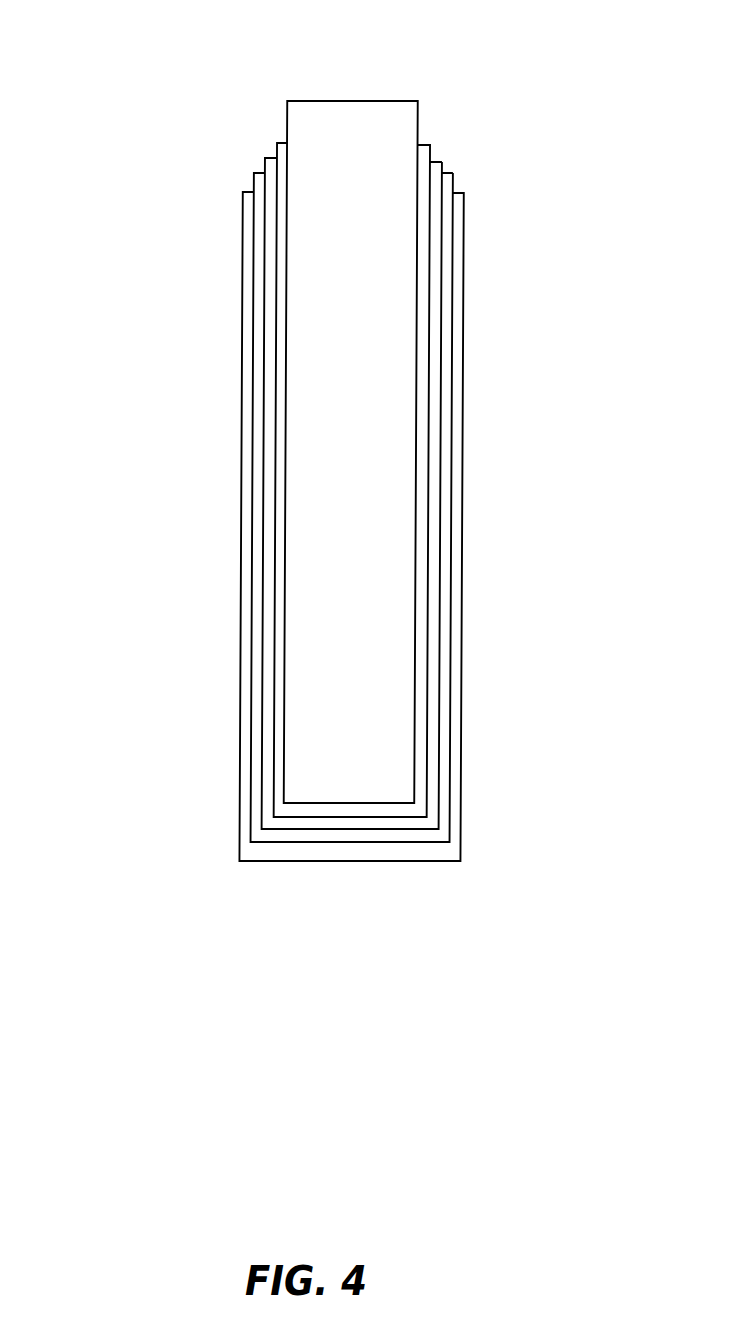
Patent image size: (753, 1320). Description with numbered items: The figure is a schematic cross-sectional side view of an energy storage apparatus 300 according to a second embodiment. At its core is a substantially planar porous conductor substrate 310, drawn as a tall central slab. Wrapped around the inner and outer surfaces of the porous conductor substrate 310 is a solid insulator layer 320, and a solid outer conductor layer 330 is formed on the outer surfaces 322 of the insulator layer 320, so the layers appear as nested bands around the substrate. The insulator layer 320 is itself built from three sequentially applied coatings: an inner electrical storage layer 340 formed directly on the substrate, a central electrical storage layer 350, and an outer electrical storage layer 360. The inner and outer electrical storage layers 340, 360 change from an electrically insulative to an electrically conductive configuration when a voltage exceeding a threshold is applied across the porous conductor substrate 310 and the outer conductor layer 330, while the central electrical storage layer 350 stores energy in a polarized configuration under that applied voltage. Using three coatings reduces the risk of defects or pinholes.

The energy storage apparatus 300 is at (518, 494).
The porous conductor substrate 310 is at (382, 118).
The insulator layer 320 is at (464, 139).
The outer surfaces of the insulator layer 322 is at (455, 175).
The outer conductor layer 330 is at (248, 287).
The inner electrical storage layer 340 is at (280, 153).
The central electrical storage layer 350 is at (270, 178).
The outer electrical storage layer 360 is at (263, 380).